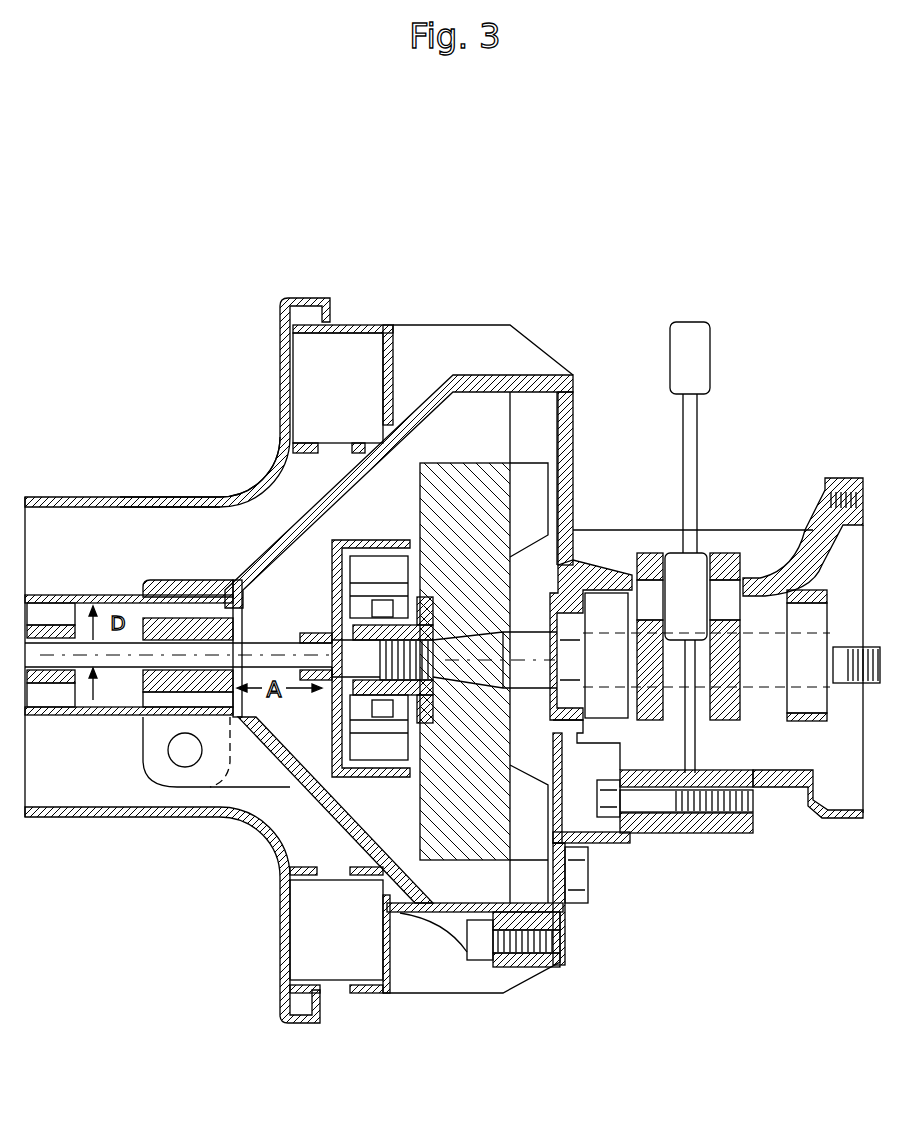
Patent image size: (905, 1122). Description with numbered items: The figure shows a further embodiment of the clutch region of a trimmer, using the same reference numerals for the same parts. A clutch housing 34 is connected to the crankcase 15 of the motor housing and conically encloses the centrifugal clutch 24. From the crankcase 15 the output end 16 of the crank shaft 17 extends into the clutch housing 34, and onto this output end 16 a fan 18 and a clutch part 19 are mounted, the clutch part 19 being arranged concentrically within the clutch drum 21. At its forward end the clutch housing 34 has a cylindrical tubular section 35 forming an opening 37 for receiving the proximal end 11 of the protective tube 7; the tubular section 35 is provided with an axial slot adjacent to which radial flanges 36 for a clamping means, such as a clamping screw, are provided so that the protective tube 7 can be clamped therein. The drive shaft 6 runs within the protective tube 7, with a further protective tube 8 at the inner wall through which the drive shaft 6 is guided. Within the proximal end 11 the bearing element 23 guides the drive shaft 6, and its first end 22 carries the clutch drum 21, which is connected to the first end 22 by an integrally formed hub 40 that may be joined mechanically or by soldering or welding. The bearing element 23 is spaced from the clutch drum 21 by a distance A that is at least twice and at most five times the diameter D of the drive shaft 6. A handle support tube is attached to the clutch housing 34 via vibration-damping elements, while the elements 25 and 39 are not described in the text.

The drive shaft 6 is at (46, 692).
The protective tube 7 is at (107, 715).
The protective tube 8 is at (52, 623).
The proximal end 11 is at (183, 597).
The crankcase 15 is at (663, 833).
The output end 16 is at (470, 650).
The crank shaft 17 is at (545, 587).
The fan 18 is at (455, 845).
The clutch part 19 is at (358, 707).
The clutch drum 21 is at (358, 540).
The first end 22 is at (270, 650).
The bearing element 23 is at (170, 622).
The centrifugal clutch 24 is at (350, 787).
The screw 25 is at (565, 872).
The clutch housing 34 is at (430, 380).
The cylindrical tubular section 35 is at (202, 595).
The radial flanges 36 is at (150, 727).
The opening 37 is at (137, 588).
The pipe 39 is at (150, 497).
The hub 40 is at (313, 633).